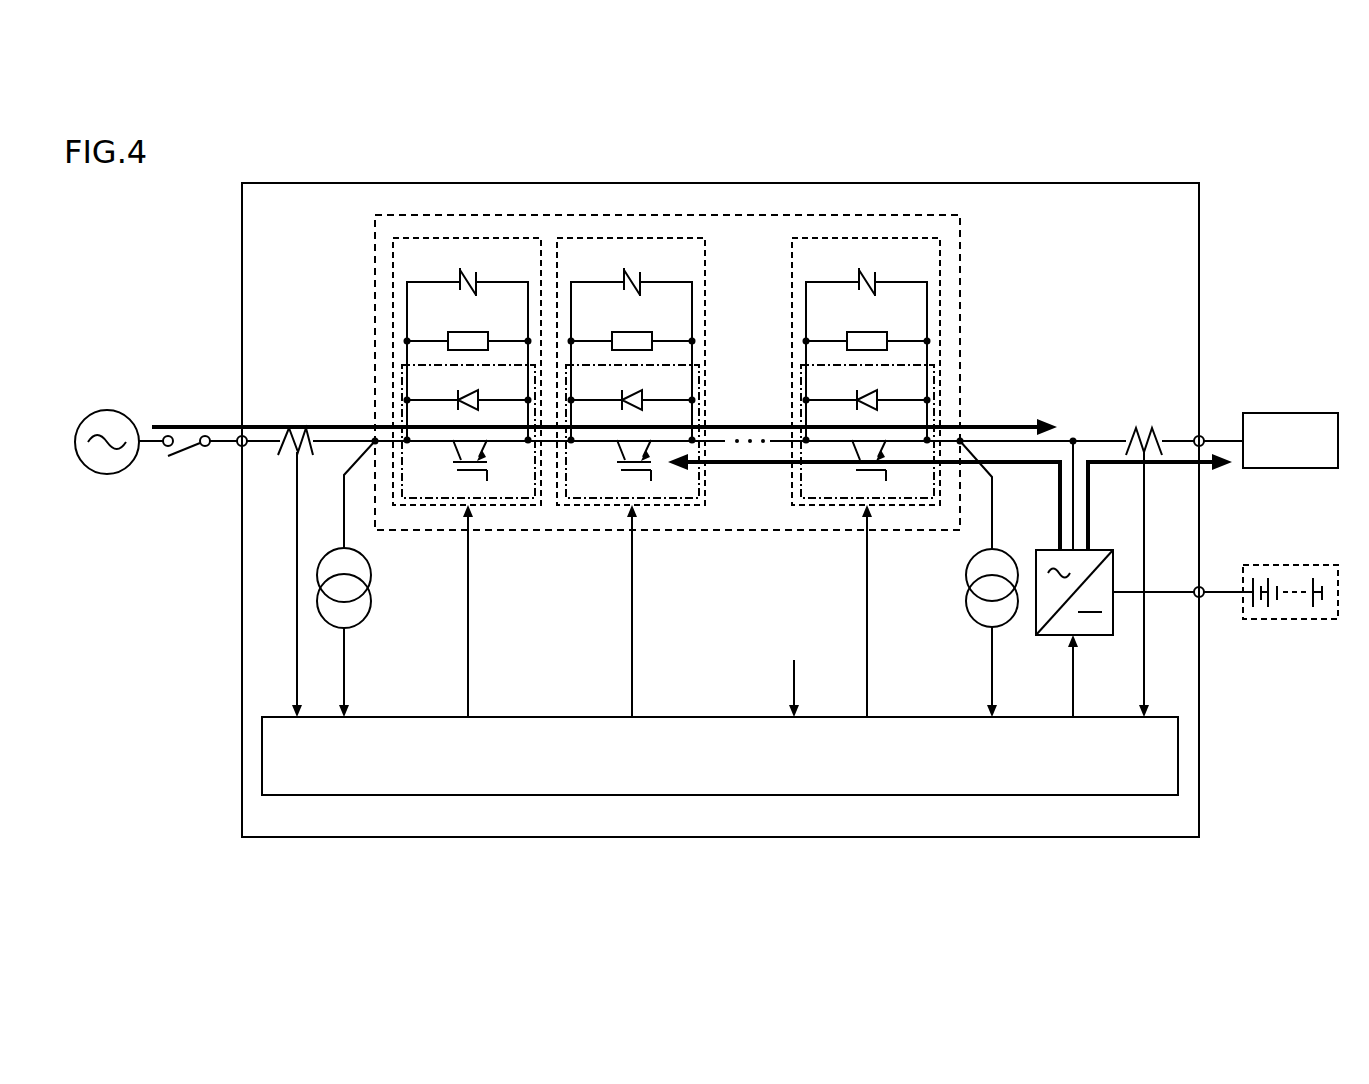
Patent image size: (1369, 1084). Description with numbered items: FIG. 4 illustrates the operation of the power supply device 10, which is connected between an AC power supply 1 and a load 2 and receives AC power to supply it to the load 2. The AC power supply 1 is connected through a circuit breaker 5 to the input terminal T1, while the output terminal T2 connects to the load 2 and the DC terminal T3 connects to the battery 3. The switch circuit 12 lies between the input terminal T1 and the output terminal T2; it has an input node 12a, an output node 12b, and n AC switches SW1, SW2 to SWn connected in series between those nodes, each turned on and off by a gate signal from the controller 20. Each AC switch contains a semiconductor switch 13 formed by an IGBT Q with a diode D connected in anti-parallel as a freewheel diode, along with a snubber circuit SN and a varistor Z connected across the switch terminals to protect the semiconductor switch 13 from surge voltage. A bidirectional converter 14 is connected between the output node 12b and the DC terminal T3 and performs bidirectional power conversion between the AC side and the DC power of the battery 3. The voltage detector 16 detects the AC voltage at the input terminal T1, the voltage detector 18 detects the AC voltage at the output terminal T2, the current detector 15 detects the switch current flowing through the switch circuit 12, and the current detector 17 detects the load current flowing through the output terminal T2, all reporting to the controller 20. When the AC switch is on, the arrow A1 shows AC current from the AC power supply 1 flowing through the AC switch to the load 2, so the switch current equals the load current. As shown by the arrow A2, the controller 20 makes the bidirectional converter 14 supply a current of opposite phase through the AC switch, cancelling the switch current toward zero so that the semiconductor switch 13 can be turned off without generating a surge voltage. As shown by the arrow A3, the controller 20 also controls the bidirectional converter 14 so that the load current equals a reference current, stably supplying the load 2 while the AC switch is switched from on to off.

The AC power supply 1 is at (107, 410).
The load 2 is at (1308, 468).
The battery 3 is at (1308, 620).
The circuit breaker 5 is at (185, 436).
The power supply device 10 is at (1122, 838).
The switch circuit 12 is at (962, 233).
The input node 12a is at (375, 437).
The output node 12b is at (960, 437).
The semiconductor switch 13 is at (422, 498).
The bidirectional converter 14 is at (1088, 637).
The current detector 15 is at (295, 427).
The voltage detector 16 is at (363, 620).
The current detector 17 is at (1139, 430).
The voltage detector 18 is at (973, 622).
The controller 20 is at (1085, 797).
The input terminal T1 is at (242, 437).
The output terminal T2 is at (1203, 437).
The DC terminal T3 is at (1203, 597).
The AC switch SW1 is at (530, 505).
The AC switch SW2 is at (694, 505).
The AC switch SWn is at (929, 505).
The varistor Z is at (467, 268).
The snubber circuit SN is at (470, 333).
The diode D is at (471, 393).
The IGBT Q is at (462, 475).
The arrow A1 is at (1020, 425).
The arrow A2 is at (775, 462).
The arrow A3 is at (1175, 466).